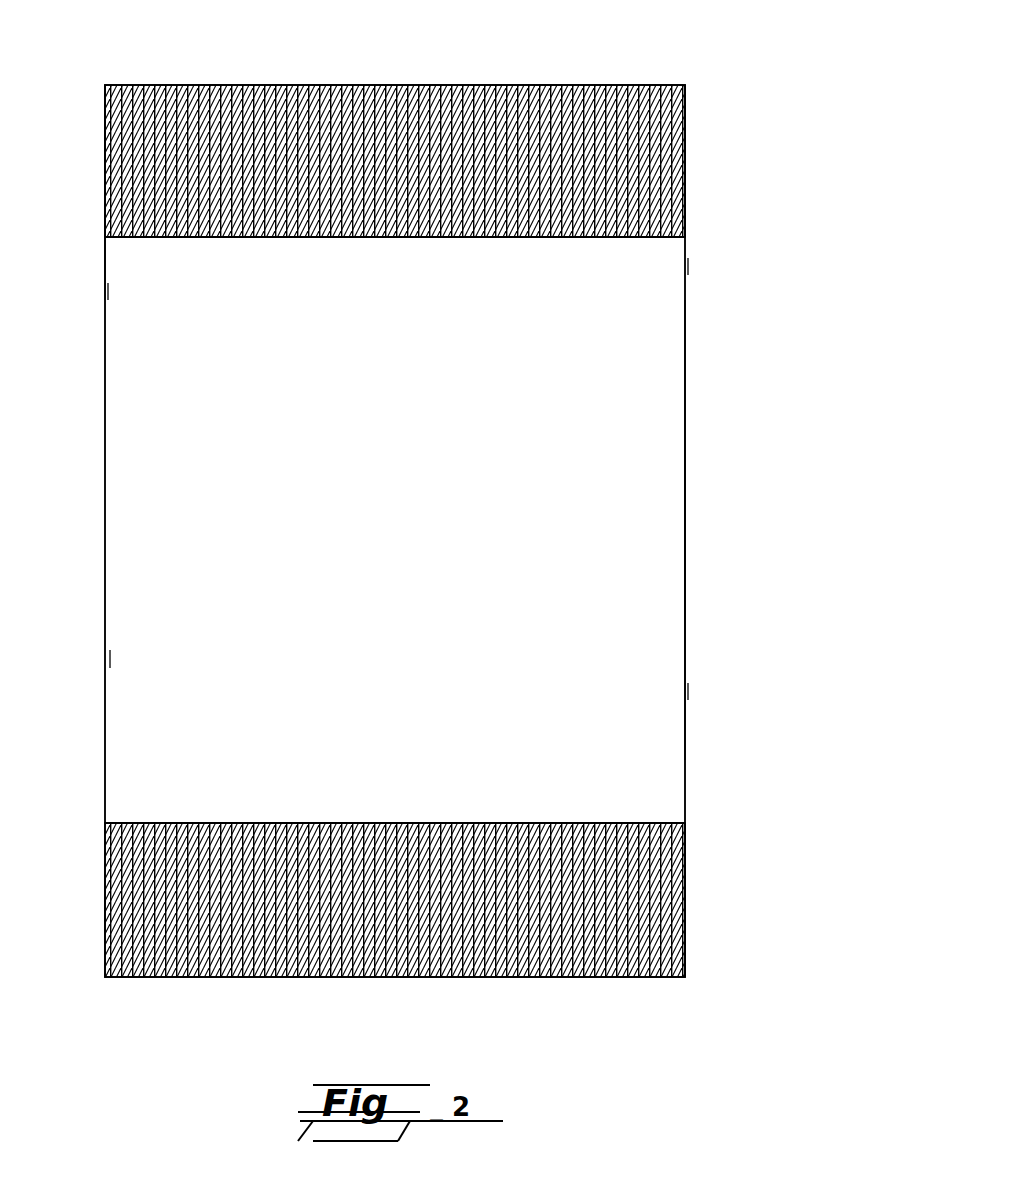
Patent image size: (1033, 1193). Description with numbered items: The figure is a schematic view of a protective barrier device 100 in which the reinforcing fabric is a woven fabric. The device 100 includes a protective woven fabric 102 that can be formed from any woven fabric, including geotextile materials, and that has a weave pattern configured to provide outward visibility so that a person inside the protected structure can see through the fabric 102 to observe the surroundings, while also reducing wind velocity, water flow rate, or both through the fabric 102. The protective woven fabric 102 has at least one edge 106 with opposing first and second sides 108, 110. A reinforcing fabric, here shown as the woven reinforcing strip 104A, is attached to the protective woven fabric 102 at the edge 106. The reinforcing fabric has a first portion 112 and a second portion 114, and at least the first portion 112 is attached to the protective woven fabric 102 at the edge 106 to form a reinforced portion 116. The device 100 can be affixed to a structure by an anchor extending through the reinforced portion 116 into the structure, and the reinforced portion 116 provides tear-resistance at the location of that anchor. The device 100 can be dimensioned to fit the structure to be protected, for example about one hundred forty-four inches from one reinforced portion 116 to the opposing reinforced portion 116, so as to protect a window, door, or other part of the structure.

The protective barrier device 100 is at (173, 1008).
The protective woven fabric 102 is at (428, 517).
The adhesive strip 104A is at (685, 153).
The edge 106 is at (685, 238).
The first side 108 is at (730, 432).
The second side 110 is at (685, 527).
The first portion 112 is at (105, 192).
The second portion 114 is at (90, 149).
The reinforced portion 116 is at (706, 108).